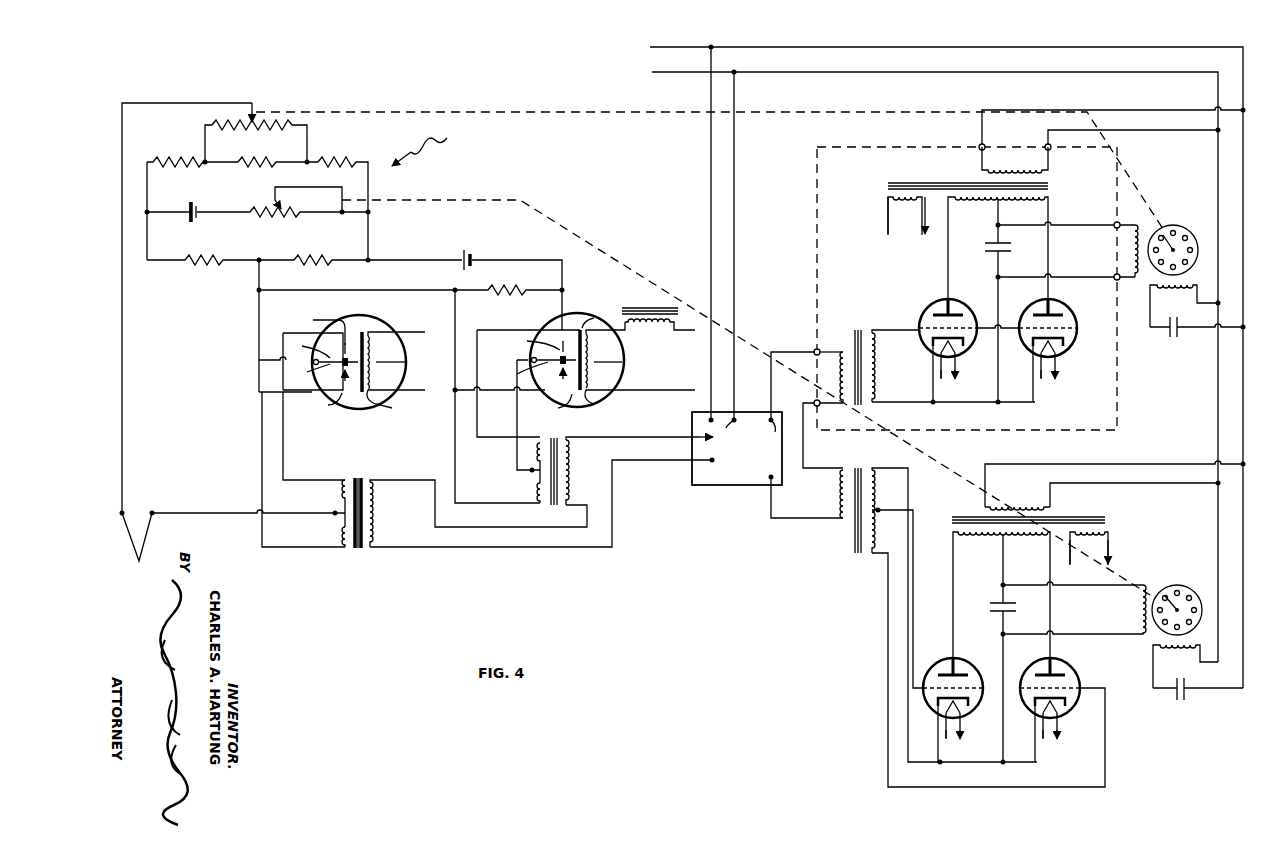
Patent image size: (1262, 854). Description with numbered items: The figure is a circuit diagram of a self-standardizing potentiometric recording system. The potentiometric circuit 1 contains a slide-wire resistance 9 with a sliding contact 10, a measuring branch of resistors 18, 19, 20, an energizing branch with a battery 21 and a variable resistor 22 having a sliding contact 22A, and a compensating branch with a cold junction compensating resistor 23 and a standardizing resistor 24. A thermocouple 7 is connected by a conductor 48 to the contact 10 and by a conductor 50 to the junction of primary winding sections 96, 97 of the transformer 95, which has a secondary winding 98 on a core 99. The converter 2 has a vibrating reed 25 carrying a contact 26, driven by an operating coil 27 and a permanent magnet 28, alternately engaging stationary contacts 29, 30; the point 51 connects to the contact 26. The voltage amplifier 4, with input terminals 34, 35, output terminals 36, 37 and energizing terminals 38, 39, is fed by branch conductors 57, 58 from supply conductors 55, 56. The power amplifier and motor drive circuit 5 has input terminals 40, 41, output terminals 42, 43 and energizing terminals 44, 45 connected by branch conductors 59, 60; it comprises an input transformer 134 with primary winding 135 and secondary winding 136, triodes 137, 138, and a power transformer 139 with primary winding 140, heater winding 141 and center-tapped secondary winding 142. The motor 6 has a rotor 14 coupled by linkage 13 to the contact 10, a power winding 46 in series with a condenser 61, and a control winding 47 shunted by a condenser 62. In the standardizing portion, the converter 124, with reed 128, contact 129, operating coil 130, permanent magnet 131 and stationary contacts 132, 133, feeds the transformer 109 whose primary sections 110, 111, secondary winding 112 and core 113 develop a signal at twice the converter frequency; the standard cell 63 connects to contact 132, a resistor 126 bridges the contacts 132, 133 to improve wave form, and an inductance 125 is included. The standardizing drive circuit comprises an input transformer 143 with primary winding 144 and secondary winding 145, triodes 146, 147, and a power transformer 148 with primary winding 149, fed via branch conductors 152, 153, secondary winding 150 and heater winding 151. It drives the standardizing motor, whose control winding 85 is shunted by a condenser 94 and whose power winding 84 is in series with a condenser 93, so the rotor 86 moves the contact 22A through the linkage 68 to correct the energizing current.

The potentiometric circuit 1 is at (424, 146).
The converter 2 is at (350, 354).
The electronic voltage amplifier 4 is at (753, 282).
The power amplifier and motor drive circuit 5 is at (806, 246).
The motor 6 is at (1183, 222).
The thermocouple 7 is at (144, 542).
The slide-wire resistance 9 is at (220, 121).
The sliding contact 10 is at (254, 113).
The mechanical linkage 13 is at (408, 108).
The rotor 14 is at (1174, 228).
The resistor 18 is at (176, 160).
The resistor 19 is at (254, 159).
The resistor 20 is at (333, 159).
The battery 21 is at (192, 220).
The variable resistor 22 is at (280, 218).
The sliding contact 22A is at (274, 198).
The thermocouple cold junction compensating resistor 23 is at (202, 258).
The standardizing resistor 24 is at (316, 258).
The vibrating reed 25 is at (301, 361).
The contact 26 is at (307, 373).
The operating coil 27 is at (402, 362).
The permanent magnet 28 is at (399, 409).
The stationary contact 29 is at (300, 404).
The stationary contact 30 is at (318, 329).
The input terminal 34 is at (700, 435).
The input terminal 35 is at (717, 461).
The output terminal 36 is at (787, 414).
The output terminal 37 is at (768, 480).
The energizing terminal 38 is at (738, 410).
The energizing terminal 39 is at (731, 257).
The input terminal 40 is at (815, 351).
The input terminal 41 is at (815, 403).
The output terminal 42 is at (1114, 222).
The output terminal 43 is at (1114, 279).
The energizing terminal 44 is at (1050, 150).
The energizing terminal 45 is at (980, 150).
The power winding 46 is at (1162, 290).
The control winding 47 is at (1128, 250).
The conductor 48 is at (126, 398).
The conductor 50 is at (202, 512).
The point 51 is at (255, 258).
The supply conductor 55 is at (642, 50).
The supply conductor 56 is at (652, 72).
The branch conductor 57 is at (736, 188).
The branch conductor 58 is at (708, 188).
The branch conductor 59 is at (1140, 136).
The branch conductor 60 is at (1112, 110).
The condenser 61 is at (1178, 334).
The condenser 62 is at (986, 246).
The standard cell 63 is at (468, 258).
The linkage 68 is at (484, 196).
The power winding 84 is at (1170, 652).
The control winding 85 is at (1138, 609).
The rotor 86 is at (1176, 592).
The condenser 93 is at (1176, 704).
The condenser 94 is at (992, 610).
The transformer 95 is at (510, 531).
The primary winding section 96 is at (338, 502).
The primary winding section 97 is at (338, 537).
The secondary winding 98 is at (375, 524).
The core 99 is at (358, 482).
The transformer 109 is at (593, 462).
The primary winding section 110 is at (534, 454).
The primary winding section 111 is at (535, 490).
The secondary winding 112 is at (570, 459).
The core 113 is at (550, 507).
The converter 124 is at (577, 312).
The inductance 125 is at (644, 326).
The resistor 126 is at (505, 286).
The reed 128 is at (512, 360).
The contact 129 is at (504, 375).
The operating coil 130 is at (622, 362).
The permanent magnet 131 is at (601, 317).
The stationary contact 132 is at (531, 341).
The stationary contact 133 is at (546, 407).
The input transformer 134 is at (928, 334).
The primary winding 135 is at (848, 344).
The secondary winding 136 is at (873, 364).
The triode electron tube 137 is at (932, 313).
The triode electron tube 138 is at (1044, 302).
The power transformer 139 is at (978, 273).
The primary winding 140 is at (995, 168).
The cathode heater energizing winding 141 is at (896, 208).
The secondary winding 142 is at (961, 208).
The input transformer 143 is at (947, 627).
The primary winding 144 is at (842, 498).
The secondary winding 145 is at (875, 500).
The triode electron tube 146 is at (952, 660).
The triode electron tube 147 is at (1048, 660).
The power transformer 148 is at (1080, 624).
The primary winding 149 is at (1002, 504).
The secondary winding 150 is at (958, 552).
The cathode heater energizing winding 151 is at (1098, 534).
The branch conductor 152 is at (1137, 465).
The branch conductor 153 is at (1140, 486).